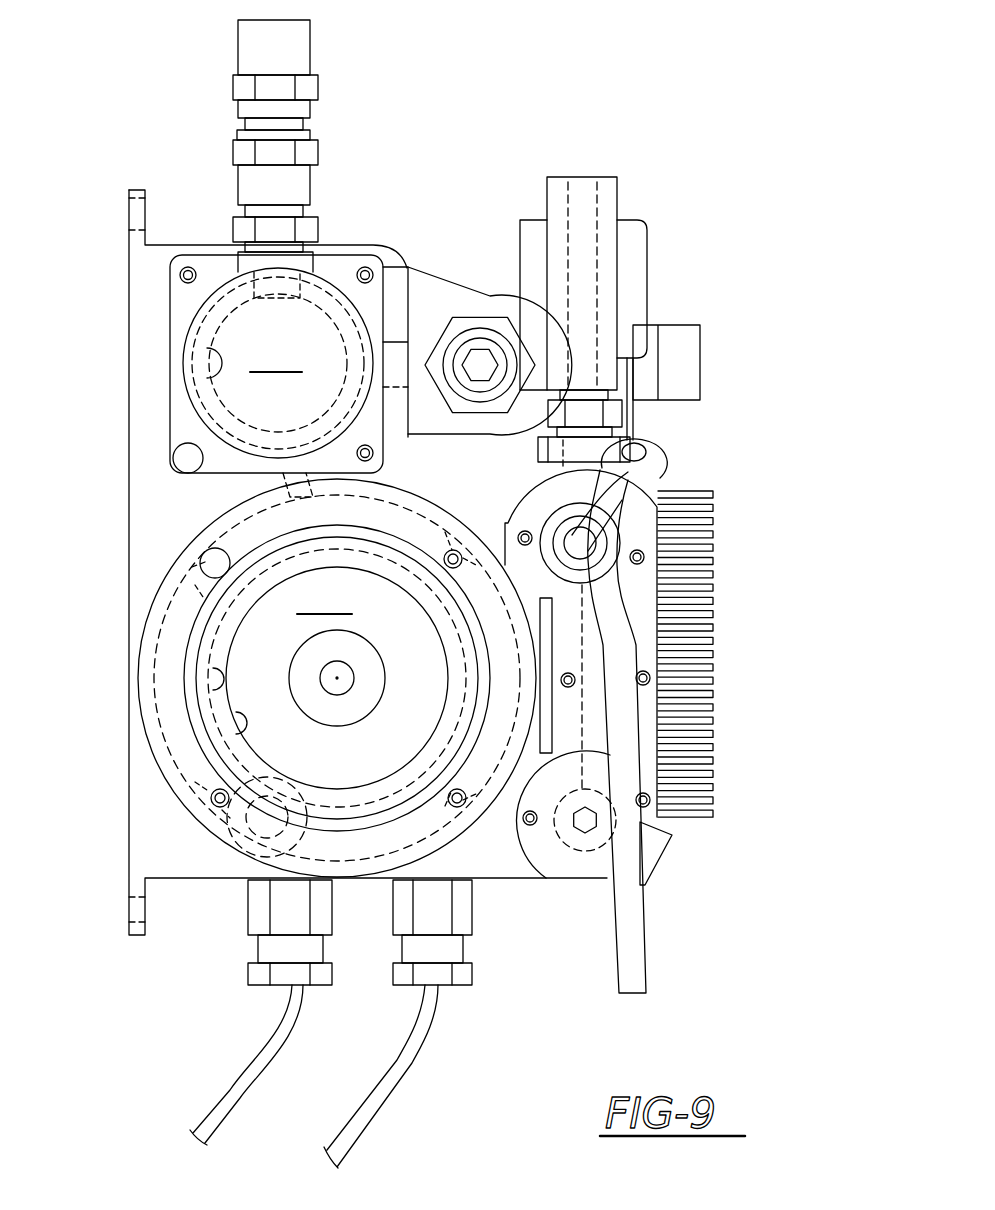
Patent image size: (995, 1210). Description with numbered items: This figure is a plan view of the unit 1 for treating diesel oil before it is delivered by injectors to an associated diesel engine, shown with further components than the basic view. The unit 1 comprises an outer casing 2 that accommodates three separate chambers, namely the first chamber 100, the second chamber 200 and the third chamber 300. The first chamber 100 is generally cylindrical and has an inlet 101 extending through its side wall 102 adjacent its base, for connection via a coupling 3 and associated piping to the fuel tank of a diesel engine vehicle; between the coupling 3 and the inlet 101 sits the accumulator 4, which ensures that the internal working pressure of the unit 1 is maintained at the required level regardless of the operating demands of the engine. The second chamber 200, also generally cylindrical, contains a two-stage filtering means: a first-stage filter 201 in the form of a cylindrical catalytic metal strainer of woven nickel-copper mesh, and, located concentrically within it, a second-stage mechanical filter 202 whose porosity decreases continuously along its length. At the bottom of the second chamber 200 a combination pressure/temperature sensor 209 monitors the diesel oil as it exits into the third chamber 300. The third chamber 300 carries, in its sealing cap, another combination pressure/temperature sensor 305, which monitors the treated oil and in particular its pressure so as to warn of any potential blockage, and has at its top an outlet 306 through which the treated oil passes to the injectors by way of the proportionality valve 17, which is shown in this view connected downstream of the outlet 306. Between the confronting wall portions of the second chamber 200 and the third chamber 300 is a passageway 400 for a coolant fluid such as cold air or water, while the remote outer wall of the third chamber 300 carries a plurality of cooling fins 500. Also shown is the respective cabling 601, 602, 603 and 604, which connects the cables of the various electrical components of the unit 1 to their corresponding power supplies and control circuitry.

The unit 1 is at (556, 148).
The outer casing 2 is at (135, 308).
The coupling 3 is at (196, 131).
The accumulator 4 is at (468, 340).
The proportionality valve 17 is at (635, 256).
The first chamber 100 is at (289, 376).
The inlet 101 is at (291, 266).
The side wall 102 is at (210, 349).
The second chamber 200 is at (337, 678).
The first-stage filter 201 is at (217, 684).
The second-stage mechanical filter 202 is at (243, 720).
The combination pressure/temperature sensor 209 is at (253, 833).
The third chamber 300 is at (645, 645).
The combination pressure/temperature sensor 305 is at (560, 528).
The outlet 306 is at (642, 468).
The passageway 400 is at (549, 715).
The cooling fins 500 is at (710, 803).
The cabling 601 is at (215, 1103).
The cabling 602 is at (397, 1085).
The cabling 603 is at (653, 487).
The cabling 604 is at (650, 925).